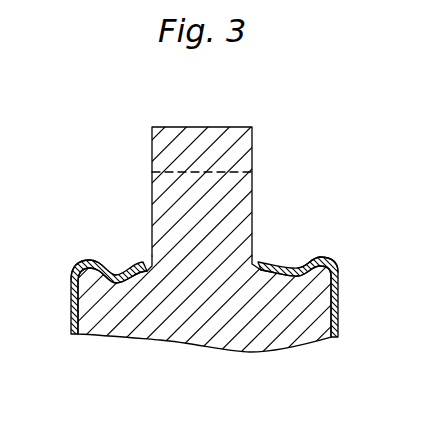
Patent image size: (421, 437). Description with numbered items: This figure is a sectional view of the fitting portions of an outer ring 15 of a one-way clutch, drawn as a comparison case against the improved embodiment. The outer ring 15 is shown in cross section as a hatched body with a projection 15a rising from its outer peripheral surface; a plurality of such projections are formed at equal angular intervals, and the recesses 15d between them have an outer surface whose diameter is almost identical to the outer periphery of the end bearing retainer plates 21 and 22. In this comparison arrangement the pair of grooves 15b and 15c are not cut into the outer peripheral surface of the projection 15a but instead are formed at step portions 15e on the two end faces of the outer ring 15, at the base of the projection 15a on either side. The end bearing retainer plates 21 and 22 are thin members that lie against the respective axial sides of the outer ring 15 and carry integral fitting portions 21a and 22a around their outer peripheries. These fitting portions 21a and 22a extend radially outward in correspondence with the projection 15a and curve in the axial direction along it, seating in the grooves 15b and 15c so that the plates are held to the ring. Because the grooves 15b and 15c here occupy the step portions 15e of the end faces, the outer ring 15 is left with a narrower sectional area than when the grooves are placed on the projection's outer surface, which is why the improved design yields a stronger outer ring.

The outer ring 15 is at (236, 318).
The projection 15a is at (226, 135).
The groove 15b is at (116, 268).
The groove 15c is at (276, 263).
The recess 15d is at (188, 168).
The step portion 15e is at (257, 264).
The end bearing retainer plate 21 is at (70, 304).
The fitting portion 21a is at (100, 258).
The end bearing retainer plate 22 is at (340, 320).
The fitting portion 22a is at (301, 261).